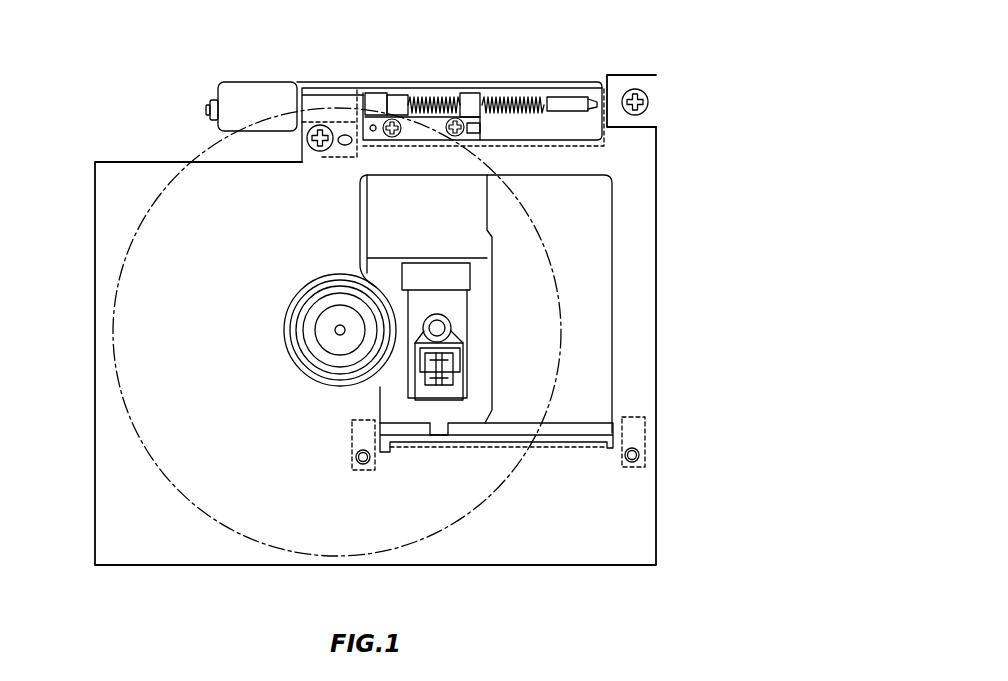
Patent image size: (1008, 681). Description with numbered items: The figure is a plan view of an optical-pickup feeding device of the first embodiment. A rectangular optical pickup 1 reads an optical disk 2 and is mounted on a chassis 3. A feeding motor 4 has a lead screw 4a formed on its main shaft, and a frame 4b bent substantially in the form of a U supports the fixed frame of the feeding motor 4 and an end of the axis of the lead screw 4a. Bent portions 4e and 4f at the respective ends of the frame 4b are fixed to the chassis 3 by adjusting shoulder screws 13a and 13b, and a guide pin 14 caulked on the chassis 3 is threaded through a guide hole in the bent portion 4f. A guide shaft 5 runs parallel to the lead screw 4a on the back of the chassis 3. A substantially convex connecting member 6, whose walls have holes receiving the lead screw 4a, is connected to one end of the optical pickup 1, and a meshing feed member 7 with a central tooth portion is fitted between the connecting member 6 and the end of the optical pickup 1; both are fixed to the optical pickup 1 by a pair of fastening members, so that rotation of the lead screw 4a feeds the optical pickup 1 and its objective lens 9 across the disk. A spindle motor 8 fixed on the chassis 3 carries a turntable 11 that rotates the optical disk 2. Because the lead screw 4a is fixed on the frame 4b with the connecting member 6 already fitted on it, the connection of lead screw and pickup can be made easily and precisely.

The optical pickup 1 is at (480, 293).
The optical disk 2 is at (193, 153).
The chassis 3 is at (117, 510).
The feeding motor 4 is at (255, 92).
The lead screw 4a is at (530, 97).
The frame 4b is at (467, 82).
The bent portion 4e is at (620, 82).
The bent portion 4f is at (330, 168).
The guide shaft 5 is at (583, 430).
The connecting member 6 is at (377, 93).
The meshing feed member 7 is at (393, 93).
The spindle motor 8 is at (307, 323).
The objective lens 9 is at (443, 327).
The turntable 11 is at (287, 345).
The adjusting shoulder screw 13a is at (649, 100).
The adjusting shoulder screw 13b is at (318, 123).
The guide pin 14 is at (344, 150).